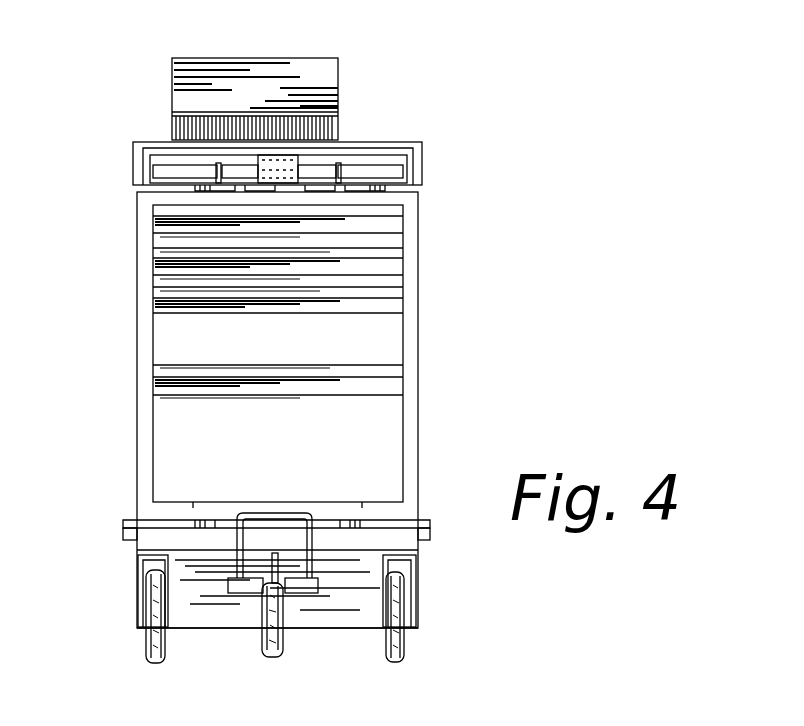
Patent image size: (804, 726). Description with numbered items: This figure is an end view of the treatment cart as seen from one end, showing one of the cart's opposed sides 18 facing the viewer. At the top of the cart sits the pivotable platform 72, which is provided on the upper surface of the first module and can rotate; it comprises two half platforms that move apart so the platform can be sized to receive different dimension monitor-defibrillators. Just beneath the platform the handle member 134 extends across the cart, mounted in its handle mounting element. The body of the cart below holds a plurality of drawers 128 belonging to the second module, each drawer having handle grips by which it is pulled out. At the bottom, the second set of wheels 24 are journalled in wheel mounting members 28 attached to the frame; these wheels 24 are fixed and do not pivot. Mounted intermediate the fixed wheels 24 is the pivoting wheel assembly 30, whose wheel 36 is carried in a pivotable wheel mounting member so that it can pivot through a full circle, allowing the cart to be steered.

The side 18 is at (127, 400).
The second set of wheels 24 is at (145, 645).
The wheel mounting members 28 is at (140, 575).
The pivoting wheel assembly 30 is at (315, 606).
The wheel 36 is at (263, 647).
The pivotable platform 72 is at (348, 107).
The drawers 128 is at (183, 335).
The handle member 134 is at (320, 168).